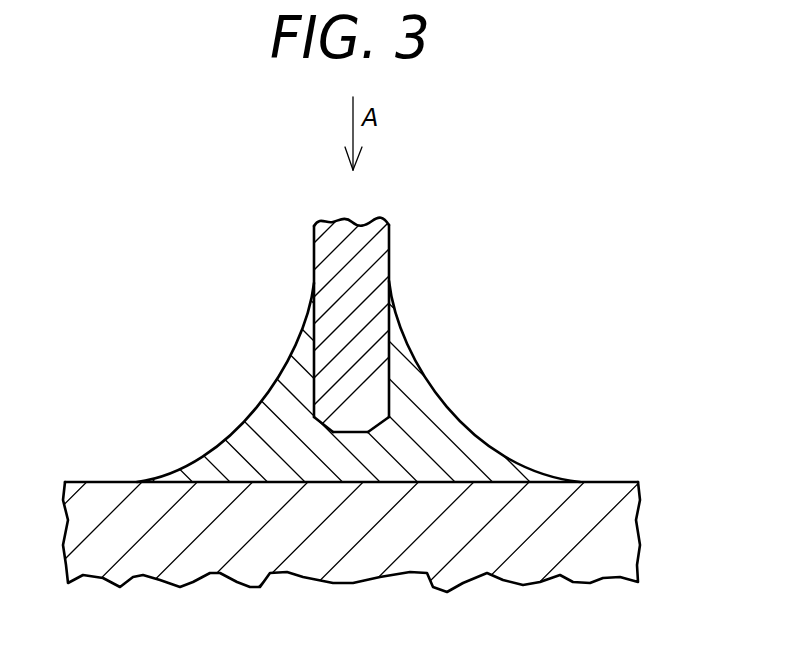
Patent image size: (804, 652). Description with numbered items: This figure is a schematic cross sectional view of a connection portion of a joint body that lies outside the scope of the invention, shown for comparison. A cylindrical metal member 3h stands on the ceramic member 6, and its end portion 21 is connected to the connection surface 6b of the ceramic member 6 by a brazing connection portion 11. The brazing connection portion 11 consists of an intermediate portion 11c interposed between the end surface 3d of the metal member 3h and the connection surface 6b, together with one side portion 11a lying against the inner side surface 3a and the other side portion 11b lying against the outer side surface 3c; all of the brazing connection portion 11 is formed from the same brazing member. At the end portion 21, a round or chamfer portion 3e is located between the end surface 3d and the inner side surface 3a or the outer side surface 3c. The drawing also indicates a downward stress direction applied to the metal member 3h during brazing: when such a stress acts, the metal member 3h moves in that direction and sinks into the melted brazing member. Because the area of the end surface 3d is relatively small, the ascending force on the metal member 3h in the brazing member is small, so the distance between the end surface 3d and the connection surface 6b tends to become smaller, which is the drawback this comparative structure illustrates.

The metal member 3h is at (337, 223).
The outer side surface 3c is at (314, 249).
The inner side surface 3a is at (390, 245).
The end surface 3d is at (341, 434).
The chamfer portion 3e is at (332, 433).
The end portion 21 is at (357, 402).
The brazing connection portion 11 is at (305, 450).
The one side portion 11a is at (410, 388).
The other side portion 11b is at (278, 395).
The intermediate portion 11c is at (372, 462).
The ceramic member 6 is at (357, 489).
The connection surface 6b is at (607, 481).